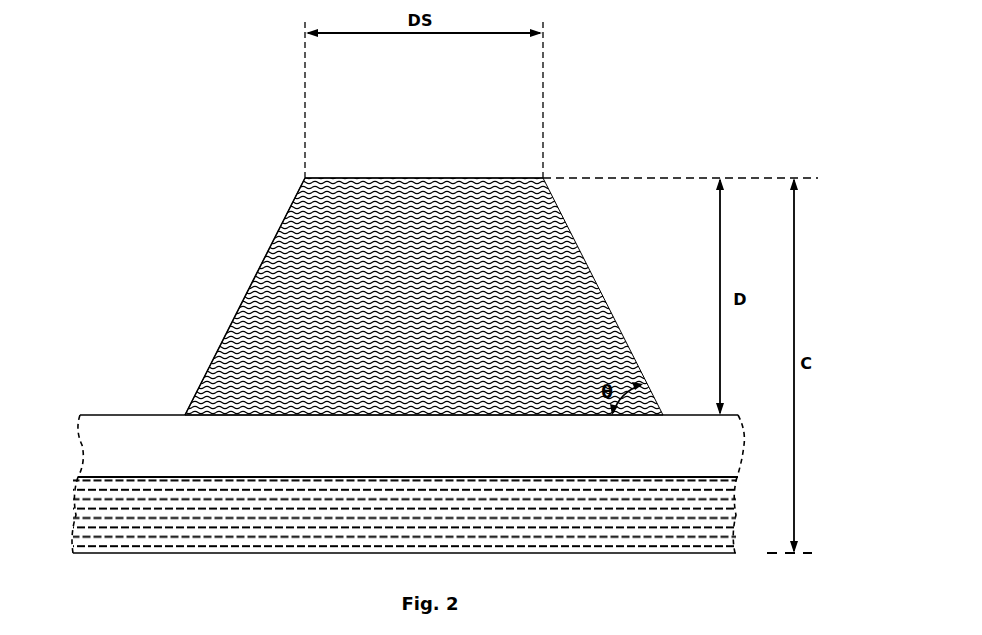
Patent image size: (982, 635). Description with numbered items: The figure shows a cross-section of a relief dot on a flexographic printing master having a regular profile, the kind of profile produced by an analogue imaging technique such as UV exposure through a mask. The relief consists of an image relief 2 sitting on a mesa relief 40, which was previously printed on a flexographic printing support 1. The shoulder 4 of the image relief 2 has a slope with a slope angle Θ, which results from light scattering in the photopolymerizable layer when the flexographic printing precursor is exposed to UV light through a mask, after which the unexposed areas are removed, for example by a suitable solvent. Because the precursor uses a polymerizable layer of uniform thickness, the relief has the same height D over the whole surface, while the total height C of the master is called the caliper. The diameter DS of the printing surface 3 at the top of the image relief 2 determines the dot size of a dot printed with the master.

The flexographic printing support 1 is at (115, 500).
The image relief 2 is at (284, 320).
The printing surface 3 is at (380, 177).
The shoulder 4 is at (272, 238).
The mesa relief 40 is at (146, 440).